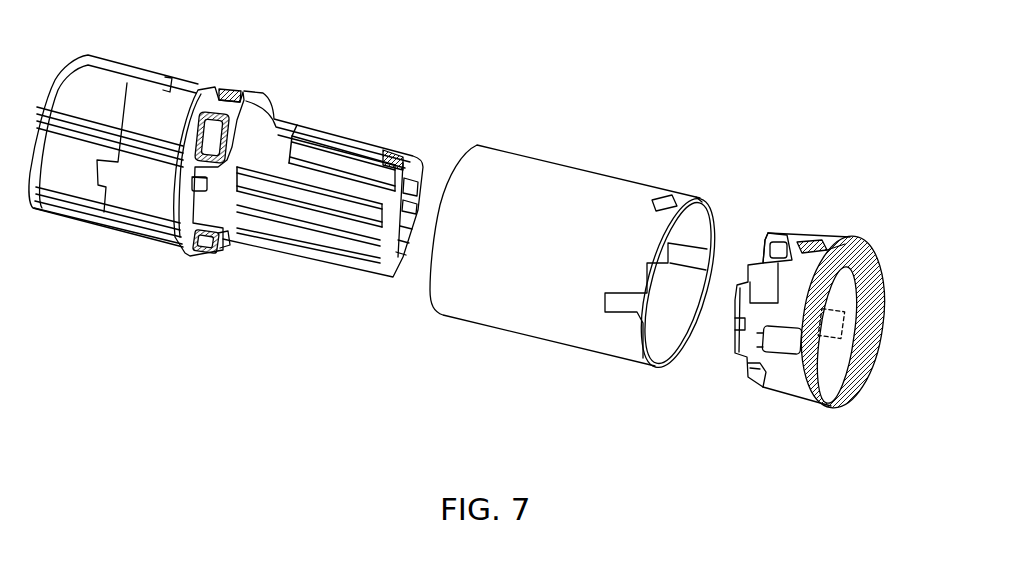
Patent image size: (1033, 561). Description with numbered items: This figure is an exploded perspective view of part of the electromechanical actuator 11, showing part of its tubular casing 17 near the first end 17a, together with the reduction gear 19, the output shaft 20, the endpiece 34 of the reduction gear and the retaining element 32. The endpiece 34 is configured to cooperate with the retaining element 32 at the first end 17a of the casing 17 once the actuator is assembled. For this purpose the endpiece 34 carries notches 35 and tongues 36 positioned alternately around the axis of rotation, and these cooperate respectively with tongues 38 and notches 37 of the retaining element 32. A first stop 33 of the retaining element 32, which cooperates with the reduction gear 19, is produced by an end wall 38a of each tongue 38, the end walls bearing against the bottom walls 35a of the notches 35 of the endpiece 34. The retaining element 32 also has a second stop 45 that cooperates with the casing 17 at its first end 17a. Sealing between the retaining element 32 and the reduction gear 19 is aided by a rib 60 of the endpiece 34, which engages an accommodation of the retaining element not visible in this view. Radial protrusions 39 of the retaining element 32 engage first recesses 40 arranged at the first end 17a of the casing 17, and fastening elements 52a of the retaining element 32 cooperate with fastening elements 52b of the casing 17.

The electromechanical actuator 11 is at (414, 355).
The casing 17 is at (523, 172).
The first end 17a is at (699, 200).
The reduction gear 19 is at (100, 214).
The output shaft 20 is at (362, 140).
The retaining element 32 is at (843, 343).
The first stop 33 is at (770, 233).
The endpiece 34 is at (180, 240).
The notches 35 is at (189, 197).
The bottom walls 35a is at (197, 185).
The tongues 36 is at (238, 133).
The notches 37 is at (775, 276).
The tongues 38 is at (785, 235).
The end wall 38a is at (731, 321).
The protrusions 39 is at (783, 345).
The first recesses 40 is at (623, 290).
The second stop 45 is at (850, 236).
The fastening elements 52a is at (830, 235).
The fastening elements 52b is at (663, 195).
The rib 60 is at (233, 102).